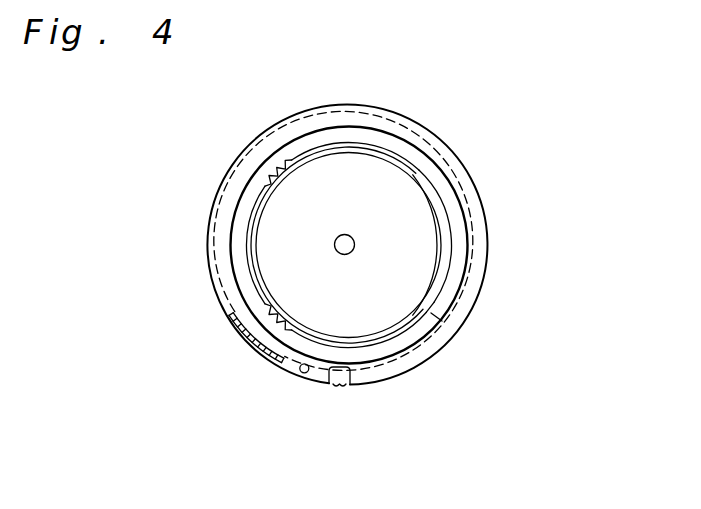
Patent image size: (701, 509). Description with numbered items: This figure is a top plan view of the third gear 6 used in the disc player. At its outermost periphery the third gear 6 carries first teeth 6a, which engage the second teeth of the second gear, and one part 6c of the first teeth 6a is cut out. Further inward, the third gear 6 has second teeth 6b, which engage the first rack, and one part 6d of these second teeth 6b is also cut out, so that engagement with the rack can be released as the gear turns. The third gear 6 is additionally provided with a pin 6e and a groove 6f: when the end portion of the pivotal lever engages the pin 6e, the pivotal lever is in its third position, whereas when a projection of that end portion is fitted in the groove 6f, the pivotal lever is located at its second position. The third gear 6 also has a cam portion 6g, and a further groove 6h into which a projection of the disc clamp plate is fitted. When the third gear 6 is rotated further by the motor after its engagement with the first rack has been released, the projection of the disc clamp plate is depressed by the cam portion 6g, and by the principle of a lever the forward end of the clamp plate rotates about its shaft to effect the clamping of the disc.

The third gear 6 is at (444, 97).
The first teeth 6a is at (253, 148).
The second teeth 6b is at (417, 173).
The cut-out part of the first teeth 6c is at (253, 350).
The cut-out part of the second teeth 6d is at (252, 252).
The pin 6e is at (303, 373).
The groove 6f is at (341, 385).
The cam portion 6g is at (452, 291).
The groove 6h is at (457, 233).